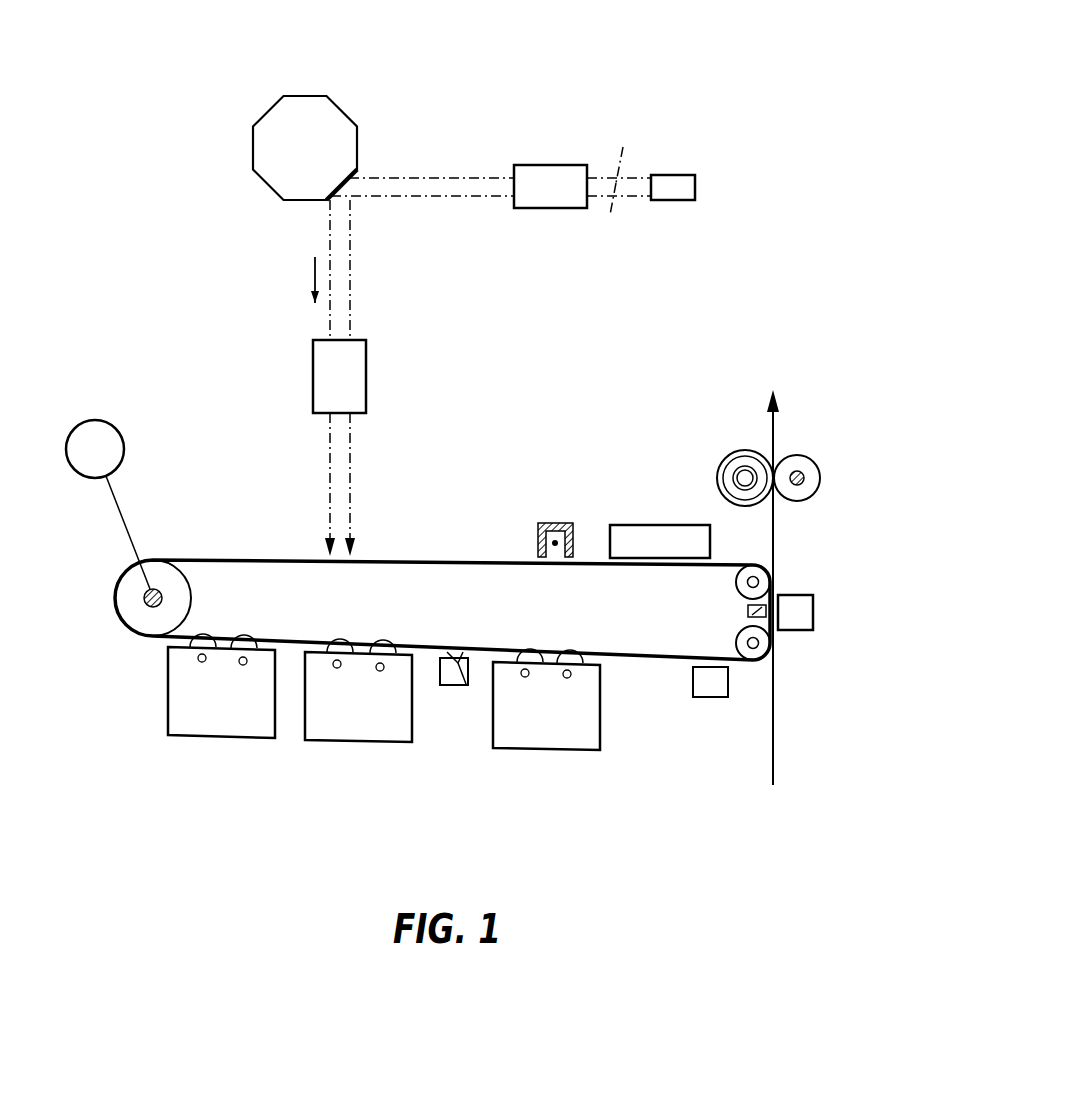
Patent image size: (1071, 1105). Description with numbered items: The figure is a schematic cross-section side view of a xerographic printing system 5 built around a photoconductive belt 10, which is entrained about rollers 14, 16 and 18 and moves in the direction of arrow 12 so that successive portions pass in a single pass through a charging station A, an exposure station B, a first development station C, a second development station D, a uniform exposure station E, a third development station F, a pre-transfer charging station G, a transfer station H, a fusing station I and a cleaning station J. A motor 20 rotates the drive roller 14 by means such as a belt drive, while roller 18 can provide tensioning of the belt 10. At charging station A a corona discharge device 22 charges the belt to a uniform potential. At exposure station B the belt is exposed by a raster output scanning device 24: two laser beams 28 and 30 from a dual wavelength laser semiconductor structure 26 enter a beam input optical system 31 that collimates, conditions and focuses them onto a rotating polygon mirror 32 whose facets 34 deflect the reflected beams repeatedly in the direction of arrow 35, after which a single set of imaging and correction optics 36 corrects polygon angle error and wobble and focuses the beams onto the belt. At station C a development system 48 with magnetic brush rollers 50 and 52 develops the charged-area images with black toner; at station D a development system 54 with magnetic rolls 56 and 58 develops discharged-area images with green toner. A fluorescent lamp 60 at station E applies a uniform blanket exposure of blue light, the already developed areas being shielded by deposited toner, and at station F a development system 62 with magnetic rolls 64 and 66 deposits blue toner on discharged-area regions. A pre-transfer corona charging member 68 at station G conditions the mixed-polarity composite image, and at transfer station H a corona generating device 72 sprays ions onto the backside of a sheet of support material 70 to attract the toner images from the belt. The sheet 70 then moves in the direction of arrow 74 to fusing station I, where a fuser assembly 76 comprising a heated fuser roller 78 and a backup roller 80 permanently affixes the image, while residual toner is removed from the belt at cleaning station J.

The xerographic printing system 5 is at (227, 180).
The photoconductive belt 10 is at (208, 548).
The arrow 12 is at (435, 573).
The roller 14 is at (167, 570).
The roller 16 is at (742, 642).
The roller 18 is at (742, 588).
The motor 20 is at (97, 432).
The corona discharge device 22 is at (567, 523).
The raster output scanning device 24 is at (682, 105).
The dual wavelength hybrid laser semiconductor structure 26 is at (683, 187).
The laser beam 28 is at (622, 151).
The laser beam 30 is at (608, 213).
The beam input optical system 31 is at (541, 178).
The rotating polygon mirror 32 is at (328, 107).
The facets 34 is at (345, 180).
The arrow 35 is at (312, 274).
The imaging and correction optics 36 is at (355, 383).
The development system 48 is at (252, 720).
The magnetic brush roller 50 is at (203, 637).
The magnetic brush roller 52 is at (248, 637).
The development system 54 is at (375, 720).
The magnetic roll 56 is at (341, 645).
The magnetic roll 58 is at (385, 645).
The fluorescent lamp 60 is at (458, 663).
The development system 62 is at (562, 737).
The magnetic roll 64 is at (530, 653).
The magnetic roll 66 is at (575, 654).
The pre-transfer corona charging member 68 is at (713, 698).
The sheet of support material 70 is at (775, 520).
The corona generating device 72 is at (770, 600).
The arrow 74 is at (775, 425).
The fuser assembly 76 is at (825, 435).
The heated fuser roller 78 is at (807, 475).
The backup roller 80 is at (732, 455).
The charging station A is at (530, 508).
The exposure station B is at (300, 527).
The first development station C is at (198, 760).
The second development station D is at (338, 768).
The uniform exposure station E is at (443, 712).
The third development station F is at (517, 777).
The pre-transfer charging station G is at (688, 725).
The transfer station H is at (825, 600).
The fusing station I is at (748, 423).
The cleaning station J is at (655, 510).